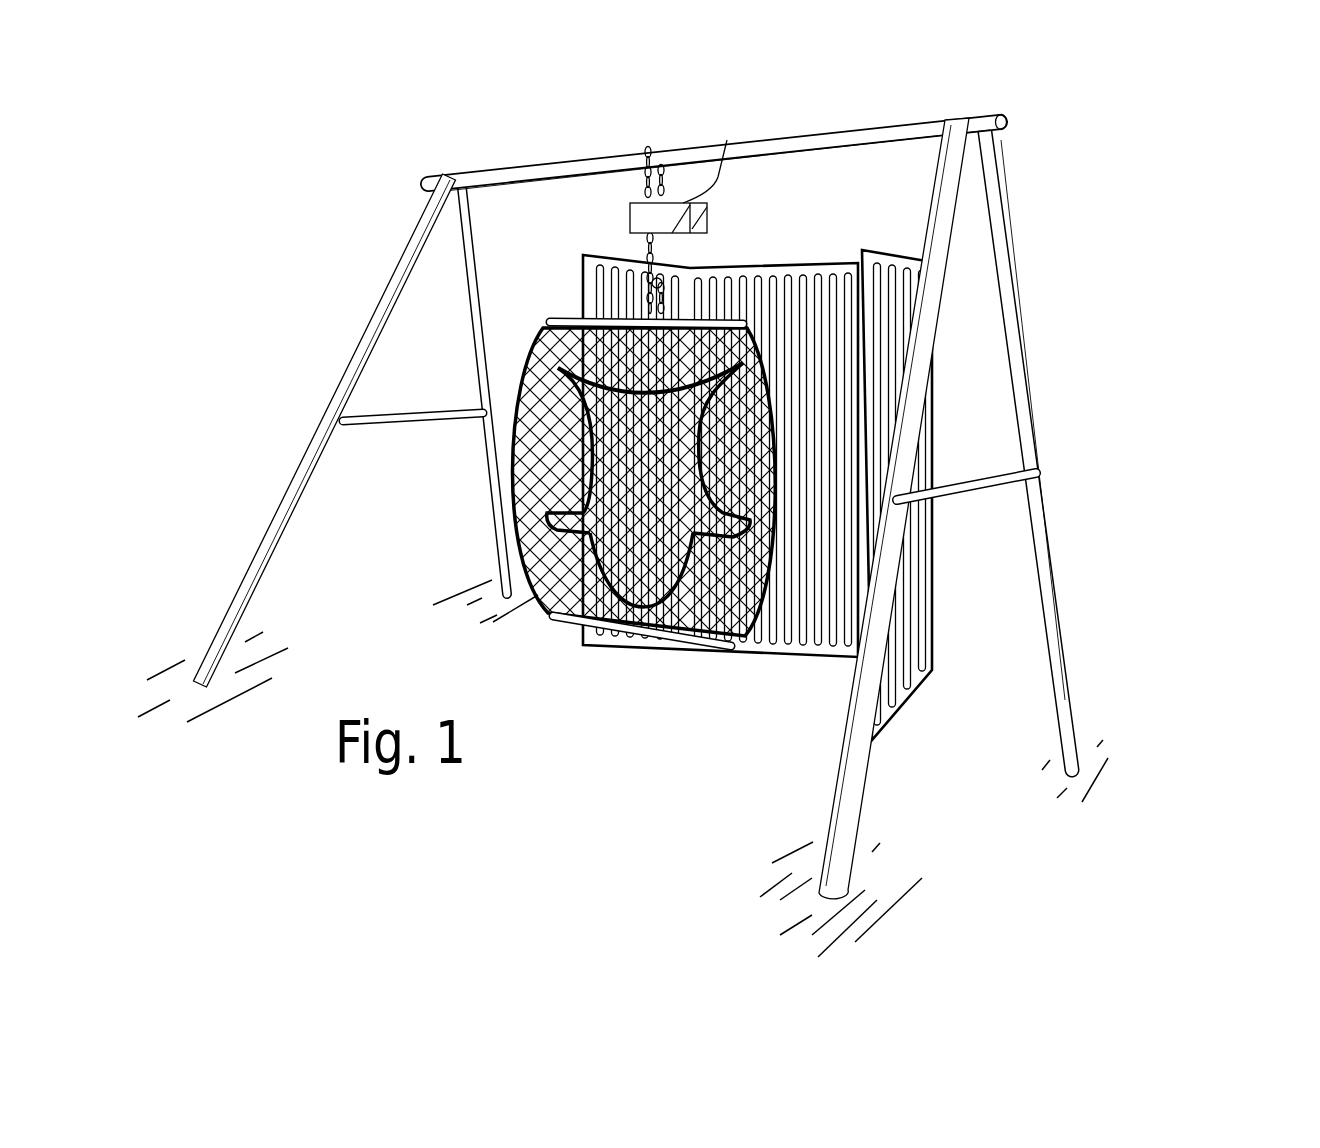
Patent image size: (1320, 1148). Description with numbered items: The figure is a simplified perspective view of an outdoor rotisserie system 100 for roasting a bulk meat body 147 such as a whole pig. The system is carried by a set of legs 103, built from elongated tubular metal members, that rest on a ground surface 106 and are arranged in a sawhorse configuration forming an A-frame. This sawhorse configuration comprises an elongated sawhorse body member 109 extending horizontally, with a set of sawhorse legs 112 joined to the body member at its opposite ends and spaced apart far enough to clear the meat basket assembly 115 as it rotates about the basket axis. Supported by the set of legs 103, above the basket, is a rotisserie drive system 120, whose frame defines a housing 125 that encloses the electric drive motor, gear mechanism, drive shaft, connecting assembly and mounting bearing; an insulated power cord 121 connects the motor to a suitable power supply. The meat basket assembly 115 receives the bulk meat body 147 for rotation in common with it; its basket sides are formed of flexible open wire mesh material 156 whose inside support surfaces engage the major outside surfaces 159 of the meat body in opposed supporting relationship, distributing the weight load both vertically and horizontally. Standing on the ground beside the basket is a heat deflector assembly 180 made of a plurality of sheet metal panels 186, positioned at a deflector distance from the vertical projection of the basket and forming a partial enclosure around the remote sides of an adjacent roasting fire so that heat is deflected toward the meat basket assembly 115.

The outdoor rotisserie system 100 is at (700, 496).
The set of legs 103 is at (695, 467).
The ground surface 106 is at (884, 878).
The sawhorse body member 109 is at (892, 130).
The set of sawhorse legs 112 is at (1080, 607).
The meat basket assembly 115 is at (556, 455).
The rotisserie drive system 120 is at (708, 222).
The insulated power cord 121 is at (718, 182).
The housing 125 is at (630, 230).
The bulk meat body 147 is at (617, 413).
The flexible open wire mesh material 156 is at (570, 487).
The major outside surfaces of the bulk meat body 159 is at (613, 554).
The heat deflector assembly 180 is at (757, 462).
The panels 186 is at (838, 266).